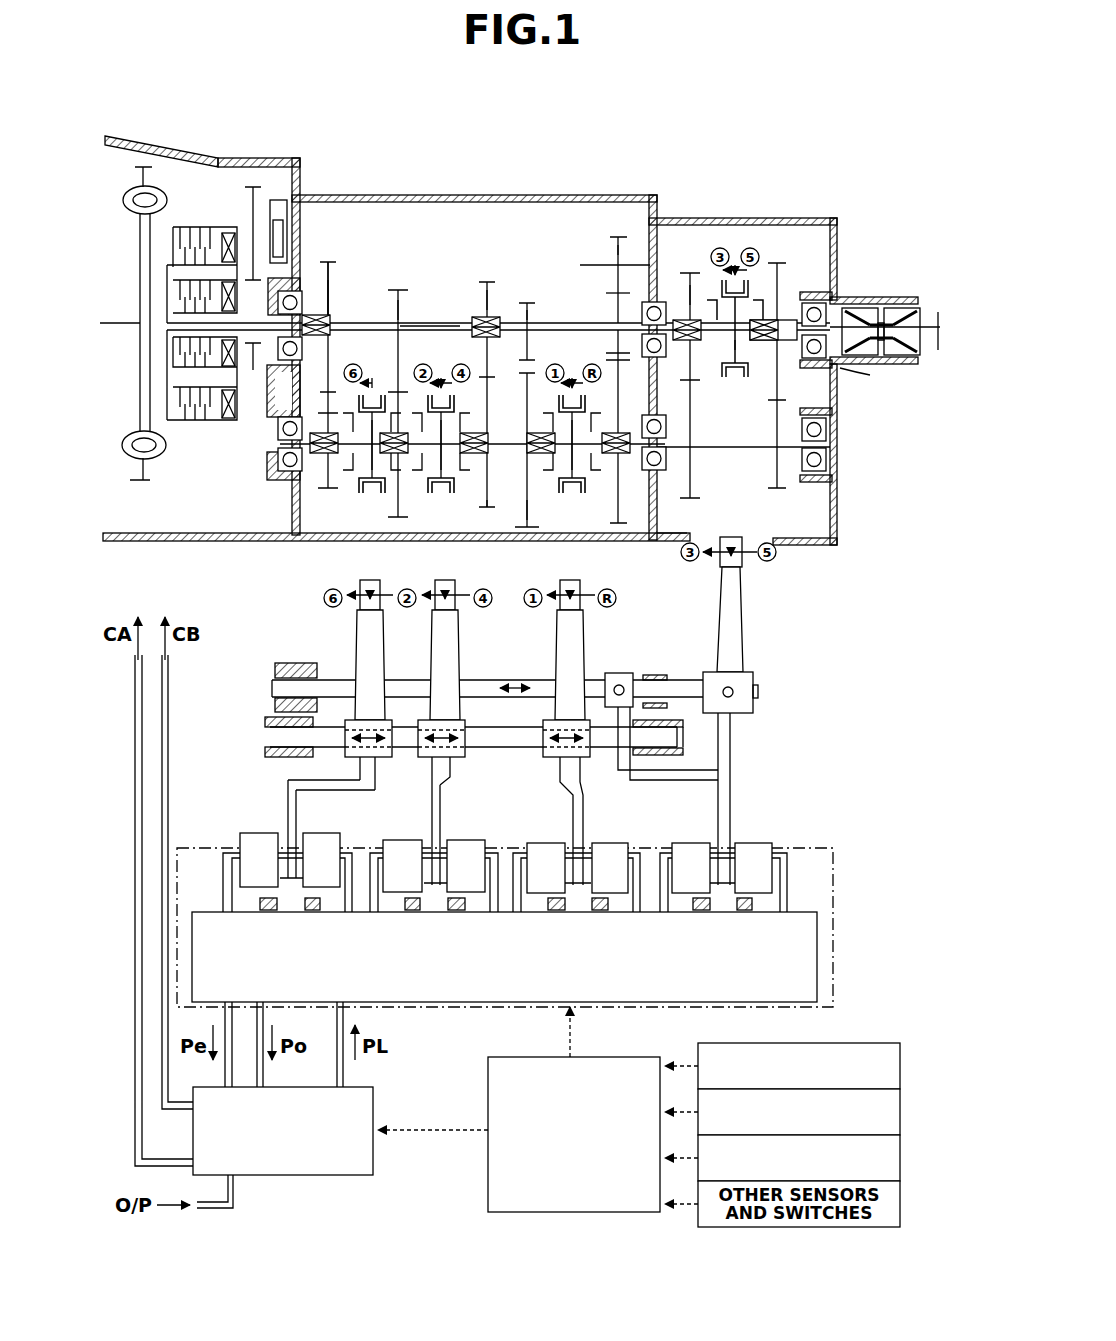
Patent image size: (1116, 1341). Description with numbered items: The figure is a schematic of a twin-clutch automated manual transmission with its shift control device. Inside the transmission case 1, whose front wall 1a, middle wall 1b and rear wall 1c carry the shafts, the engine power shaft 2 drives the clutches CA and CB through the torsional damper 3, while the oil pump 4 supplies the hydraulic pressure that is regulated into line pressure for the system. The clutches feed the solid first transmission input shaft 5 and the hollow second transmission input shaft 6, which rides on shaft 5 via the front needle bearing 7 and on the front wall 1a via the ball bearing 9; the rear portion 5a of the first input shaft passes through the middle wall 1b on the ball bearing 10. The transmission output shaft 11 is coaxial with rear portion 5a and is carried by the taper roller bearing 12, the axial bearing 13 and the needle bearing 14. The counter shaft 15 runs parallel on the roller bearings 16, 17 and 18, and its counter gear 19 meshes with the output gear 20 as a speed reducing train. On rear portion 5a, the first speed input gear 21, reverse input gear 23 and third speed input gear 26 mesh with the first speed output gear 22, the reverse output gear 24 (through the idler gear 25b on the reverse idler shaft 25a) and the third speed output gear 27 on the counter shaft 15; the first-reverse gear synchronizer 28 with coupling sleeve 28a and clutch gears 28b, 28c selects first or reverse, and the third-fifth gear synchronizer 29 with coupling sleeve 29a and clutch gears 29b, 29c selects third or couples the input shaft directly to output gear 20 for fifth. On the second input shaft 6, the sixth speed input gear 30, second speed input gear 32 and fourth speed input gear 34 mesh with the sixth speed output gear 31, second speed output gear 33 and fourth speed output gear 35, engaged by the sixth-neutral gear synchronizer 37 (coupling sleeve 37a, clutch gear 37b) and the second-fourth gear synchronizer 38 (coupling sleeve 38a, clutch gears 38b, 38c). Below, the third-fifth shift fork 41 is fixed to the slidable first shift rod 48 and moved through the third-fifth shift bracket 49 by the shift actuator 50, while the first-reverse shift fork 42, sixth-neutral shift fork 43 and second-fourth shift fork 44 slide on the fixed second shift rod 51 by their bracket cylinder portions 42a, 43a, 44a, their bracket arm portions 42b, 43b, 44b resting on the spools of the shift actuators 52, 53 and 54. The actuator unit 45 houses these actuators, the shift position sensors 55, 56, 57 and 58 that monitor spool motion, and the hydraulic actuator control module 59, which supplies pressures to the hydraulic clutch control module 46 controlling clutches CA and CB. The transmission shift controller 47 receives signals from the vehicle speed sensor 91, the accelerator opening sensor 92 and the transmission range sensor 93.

The transmission case 1 is at (603, 194).
The front wall 1a is at (300, 230).
The middle wall 1b is at (658, 230).
The rear wall 1c is at (838, 240).
The engine power shaft 2 is at (120, 323).
The torsional damper 3 is at (143, 186).
The oil pump 4 is at (280, 200).
The first transmission input shaft 5 is at (352, 322).
The rear portion of first transmission input shaft 5a is at (547, 328).
The second transmission input shaft 6 is at (421, 322).
The front needle bearing 7 is at (330, 261).
The ball bearing 9 is at (292, 292).
The ball bearing 10 is at (654, 302).
The transmission output shaft 11 is at (930, 326).
The taper roller bearing 12 is at (810, 301).
The axial bearing 13 is at (858, 308).
The needle bearing 14 is at (822, 358).
The counter shaft 15 is at (723, 448).
The roller bearing 16 is at (276, 460).
The roller bearing 17 is at (648, 470).
The roller bearing 18 is at (822, 440).
The counter gear 19 is at (782, 489).
The output gear 20 is at (777, 262).
The first speed input gear 21 is at (525, 301).
The first speed output gear 22 is at (519, 532).
The reverse input gear 23 is at (610, 322).
The reverse output gear 24 is at (618, 525).
The reverse idler shaft 25a is at (607, 290).
The idler gear 25b is at (610, 254).
The third speed input gear 26 is at (687, 271).
The third speed output gear 27 is at (682, 531).
The first-reverse gear synchronizer 28 is at (590, 495).
The coupling sleeve 28a is at (576, 497).
The clutch gear 28b is at (533, 530).
The clutch gear 28c is at (617, 525).
The third-fifth gear synchronizer 29 is at (739, 380).
The coupling sleeve 29a is at (755, 380).
The clutch gear 29b is at (709, 385).
The clutch gear 29c is at (763, 342).
The sixth speed input gear 30 is at (338, 282).
The sixth speed output gear 31 is at (320, 488).
The second speed input gear 32 is at (398, 289).
The second speed output gear 33 is at (385, 525).
The fourth speed input gear 34 is at (480, 316).
The fourth speed output gear 35 is at (494, 510).
The sixth-neutral gear synchronizer 37 is at (370, 498).
The coupling sleeve 37a is at (340, 505).
The clutch gear 37b is at (345, 488).
The second-fourth gear synchronizer 38 is at (444, 497).
The coupling sleeve 38a is at (462, 473).
The clutch gear 38b is at (398, 520).
The clutch gear 38c is at (487, 508).
The third-fifth shift fork 41 is at (735, 607).
The first-reverse shift fork 42 is at (572, 650).
The bracket cylinder portion 42a is at (582, 758).
The bracket arm portion 42b is at (583, 813).
The sixth-neutral shift fork 43 is at (370, 633).
The bracket cylinder portion 43a is at (385, 758).
The bracket arm portion 43b is at (345, 795).
The second-fourth shift fork 44 is at (447, 638).
The bracket cylinder portion 44a is at (462, 758).
The bracket arm portion 44b is at (443, 800).
The actuator unit 45 is at (803, 847).
The hydraulic clutch control module 46 is at (291, 1176).
The transmission shift controller 47 is at (568, 1213).
The first shift rod 48 is at (512, 680).
The third-fifth shift bracket 49 is at (710, 770).
The third-fifth shift actuator 50 is at (757, 843).
The second shift rod 51 is at (485, 727).
The first-reverse shift actuator 52 is at (610, 843).
The sixth-neutral shift actuator 53 is at (327, 833).
The second-fourth shift actuator 54 is at (468, 840).
The shift position sensor 55 is at (744, 912).
The shift position sensor 56 is at (600, 912).
The shift position sensor 57 is at (313, 912).
The shift position sensor 58 is at (456, 912).
The hydraulic actuator control module 59 is at (460, 1003).
The vehicle speed sensor 91 is at (902, 1067).
The accelerator opening sensor 92 is at (902, 1113).
The transmission range sensor 93 is at (902, 1159).